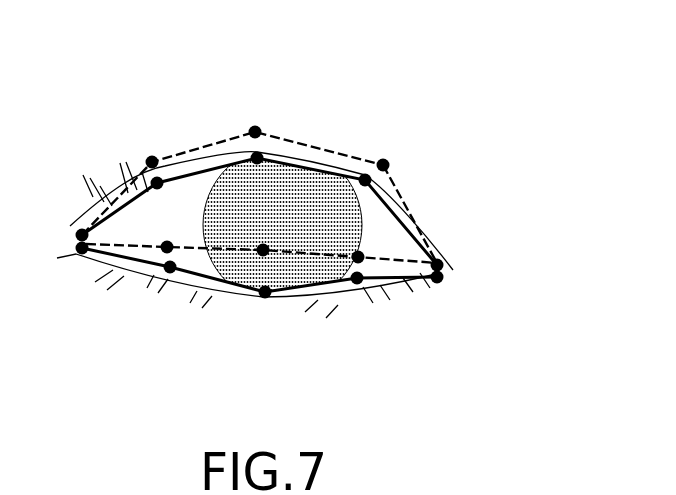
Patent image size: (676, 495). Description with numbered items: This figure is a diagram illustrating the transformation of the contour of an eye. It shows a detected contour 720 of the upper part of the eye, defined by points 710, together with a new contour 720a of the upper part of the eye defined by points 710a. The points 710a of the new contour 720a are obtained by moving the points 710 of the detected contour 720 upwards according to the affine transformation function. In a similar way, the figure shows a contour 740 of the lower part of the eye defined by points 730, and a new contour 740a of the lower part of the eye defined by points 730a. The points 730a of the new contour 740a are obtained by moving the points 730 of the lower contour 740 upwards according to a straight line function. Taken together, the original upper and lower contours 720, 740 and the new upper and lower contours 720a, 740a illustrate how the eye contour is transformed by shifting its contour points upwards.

The points of detected contour of upper part of eye 710 is at (259, 156).
The points of new contour of upper part of eye 710a is at (256, 131).
The detected contour of upper part of eye 720 is at (388, 178).
The new contour of upper part of eye 720a is at (412, 218).
The points of contour of lower part of eye 730 is at (265, 293).
The points of new contour of lower part of eye 730a is at (260, 255).
The contour of lower part of eye 740 is at (192, 275).
The new contour of lower part of eye 740a is at (322, 258).